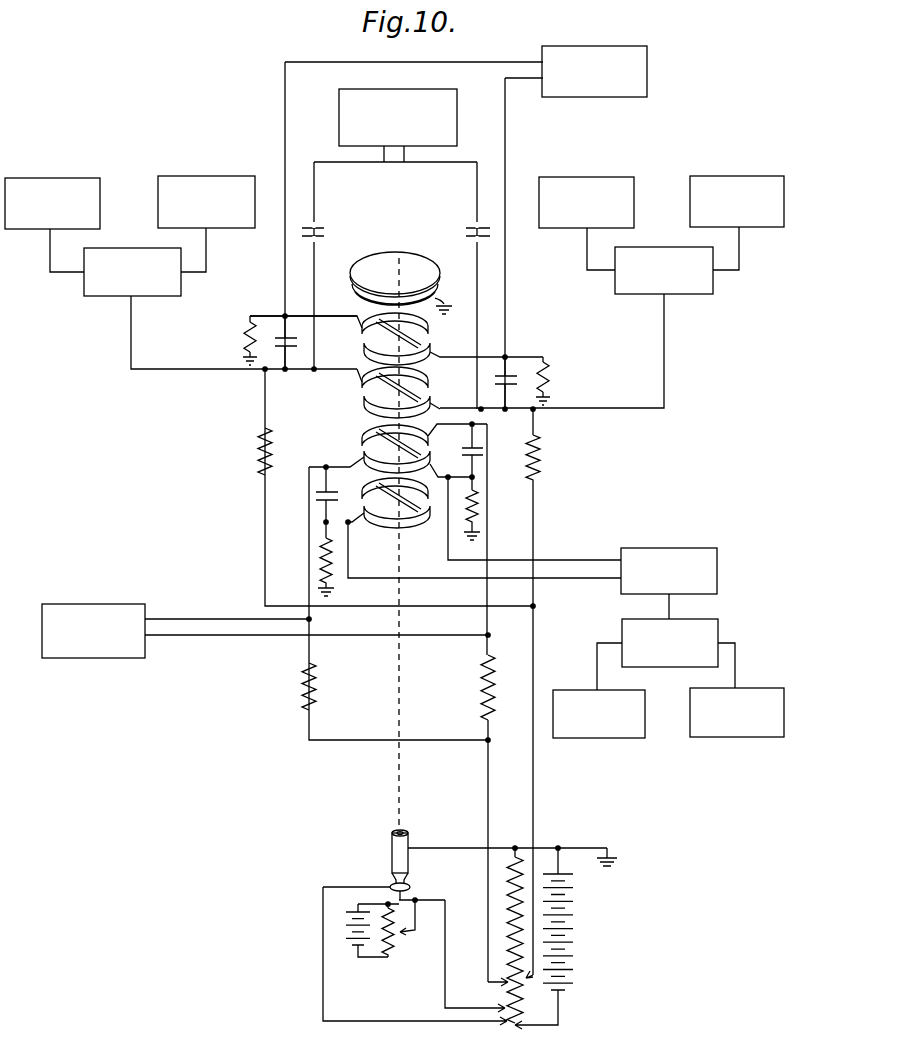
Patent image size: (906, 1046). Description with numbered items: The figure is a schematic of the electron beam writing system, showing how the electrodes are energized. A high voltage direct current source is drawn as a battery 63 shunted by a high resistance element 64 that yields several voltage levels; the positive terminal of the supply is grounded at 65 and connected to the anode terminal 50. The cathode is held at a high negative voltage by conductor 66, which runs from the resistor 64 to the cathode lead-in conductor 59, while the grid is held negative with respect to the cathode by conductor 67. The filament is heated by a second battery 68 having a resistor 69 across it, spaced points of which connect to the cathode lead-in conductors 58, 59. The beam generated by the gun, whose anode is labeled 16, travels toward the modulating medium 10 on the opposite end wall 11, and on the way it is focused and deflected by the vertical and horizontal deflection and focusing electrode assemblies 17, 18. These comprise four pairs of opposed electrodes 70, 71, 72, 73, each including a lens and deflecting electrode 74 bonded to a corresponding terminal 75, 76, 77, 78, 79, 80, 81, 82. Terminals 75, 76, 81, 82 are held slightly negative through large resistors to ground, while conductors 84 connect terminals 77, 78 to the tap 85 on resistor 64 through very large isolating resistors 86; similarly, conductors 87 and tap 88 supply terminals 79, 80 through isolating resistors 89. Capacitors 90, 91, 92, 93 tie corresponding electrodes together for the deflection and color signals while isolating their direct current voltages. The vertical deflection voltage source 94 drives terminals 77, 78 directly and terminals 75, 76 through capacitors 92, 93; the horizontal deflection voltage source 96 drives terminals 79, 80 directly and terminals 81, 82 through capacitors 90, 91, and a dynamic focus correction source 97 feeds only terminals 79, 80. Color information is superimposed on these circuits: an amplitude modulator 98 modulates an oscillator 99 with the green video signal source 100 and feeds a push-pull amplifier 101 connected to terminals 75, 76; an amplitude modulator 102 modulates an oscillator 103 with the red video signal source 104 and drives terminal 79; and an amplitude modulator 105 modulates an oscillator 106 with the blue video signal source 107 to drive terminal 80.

The modulating medium 10 is at (393, 275).
The end wall 11 is at (418, 264).
The anode electrode 16 is at (410, 859).
The vertical deflection and focusing electrode assembly 17 is at (406, 488).
The horizontal deflection and focusing electrode assembly 18 is at (377, 409).
The anode terminal 50 is at (410, 862).
The cathode lead-in conductor 58 is at (388, 897).
The cathode lead-in conductor 59 is at (411, 894).
The battery 63 is at (582, 931).
The high resistance element 64 is at (510, 897).
The ground 65 is at (614, 857).
The conductor 66 is at (445, 970).
The conductor 67 is at (374, 1021).
The battery 68 is at (336, 922).
The resistor 69 is at (399, 942).
The pair of opposed electrodes 70 is at (410, 508).
The pair of opposed electrodes 71 is at (406, 452).
The pair of opposed electrodes 72 is at (402, 394).
The pair of opposed electrodes 73 is at (377, 409).
The lens and deflecting electrode 74 is at (404, 318).
The terminal 75 is at (378, 526).
The terminal 76 is at (434, 509).
The terminal 77 is at (363, 454).
The terminal 78 is at (432, 451).
The terminal 79 is at (360, 389).
The terminal 80 is at (432, 398).
The terminal 81 is at (360, 333).
The terminal 82 is at (436, 351).
The conductor 84 is at (314, 652).
The tap 85 is at (488, 982).
The resistor 86 is at (316, 688).
The conductor 87 is at (265, 538).
The tap 88 is at (548, 996).
The isolating resistor 89 is at (556, 460).
The capacitor 90 is at (298, 338).
The capacitor 91 is at (494, 391).
The capacitor 92 is at (336, 495).
The capacitor 93 is at (456, 455).
The vertical deflection voltage source 94 is at (128, 658).
The horizontal deflection voltage source 96 is at (600, 97).
The dynamic focus correction source 97 is at (339, 108).
The amplitude modulator 98 is at (668, 667).
The oscillator 99 is at (760, 737).
The green video signal source 100 is at (606, 738).
The push-pull amplifier 101 is at (717, 567).
The amplitude modulator 102 is at (134, 242).
The oscillator 103 is at (215, 176).
The red video signal source 104 is at (70, 178).
The amplitude modulator 105 is at (662, 240).
The oscillator 106 is at (740, 176).
The blue video signal source 107 is at (585, 177).